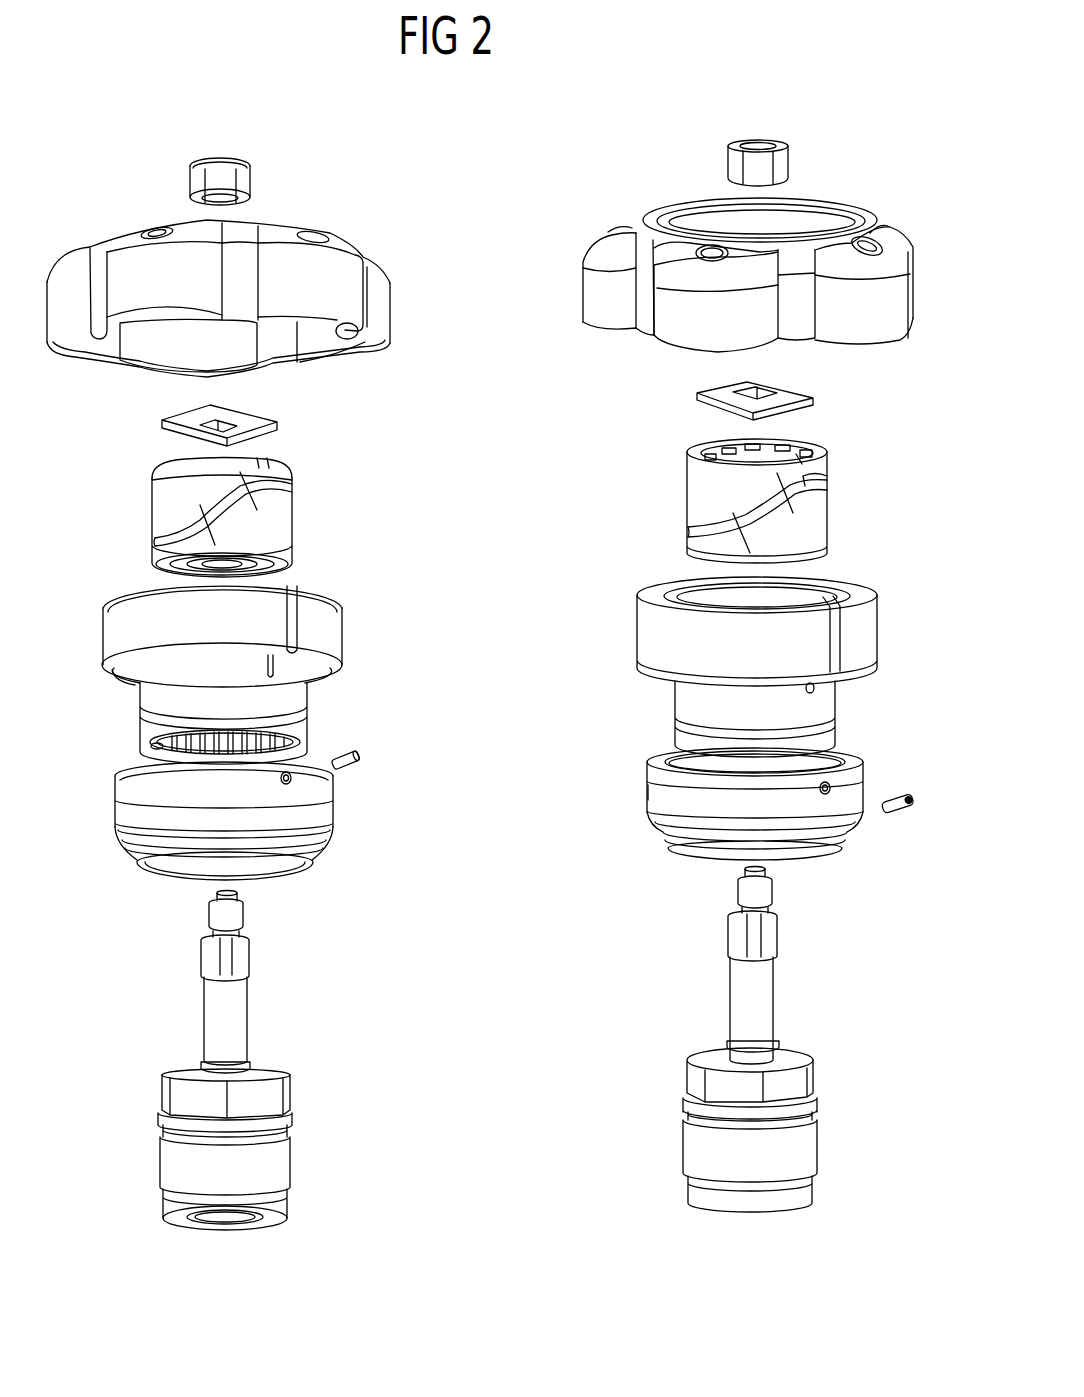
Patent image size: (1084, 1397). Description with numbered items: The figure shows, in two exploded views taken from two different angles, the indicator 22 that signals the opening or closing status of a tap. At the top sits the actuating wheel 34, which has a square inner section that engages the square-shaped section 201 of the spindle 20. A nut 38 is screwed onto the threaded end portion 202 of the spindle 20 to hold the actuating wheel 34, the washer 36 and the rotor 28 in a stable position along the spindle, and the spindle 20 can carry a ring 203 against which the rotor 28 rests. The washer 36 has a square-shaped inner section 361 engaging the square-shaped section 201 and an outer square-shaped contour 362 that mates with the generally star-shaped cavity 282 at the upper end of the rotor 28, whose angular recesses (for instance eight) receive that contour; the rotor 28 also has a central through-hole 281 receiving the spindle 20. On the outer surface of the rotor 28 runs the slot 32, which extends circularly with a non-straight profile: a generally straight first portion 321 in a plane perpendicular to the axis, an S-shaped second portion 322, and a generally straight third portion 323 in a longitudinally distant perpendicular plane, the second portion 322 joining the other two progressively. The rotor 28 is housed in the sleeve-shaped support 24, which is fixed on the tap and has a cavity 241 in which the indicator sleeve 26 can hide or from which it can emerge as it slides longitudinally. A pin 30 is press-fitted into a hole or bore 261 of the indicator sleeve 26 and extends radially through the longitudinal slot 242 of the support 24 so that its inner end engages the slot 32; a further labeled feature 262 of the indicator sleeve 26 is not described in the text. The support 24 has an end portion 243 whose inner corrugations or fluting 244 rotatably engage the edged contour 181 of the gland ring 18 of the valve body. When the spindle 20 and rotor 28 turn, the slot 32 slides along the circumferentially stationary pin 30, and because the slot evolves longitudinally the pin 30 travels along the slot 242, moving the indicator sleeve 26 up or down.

The nut 38 is at (555, 156).
The actuating wheel 34 is at (540, 275).
The washer 36 is at (528, 399).
The square-shaped inner section 361 is at (790, 376).
The outer square-shaped contour 362 is at (796, 392).
The rotor 28 is at (489, 488).
The central through-hole 281 is at (718, 432).
The cavity 282 is at (822, 431).
The slot 32 is at (489, 508).
The first portion 321 is at (568, 498).
The second portion 322 is at (544, 534).
The third portion 323 is at (386, 542).
The indicator 22 is at (504, 717).
The sleeve-shaped support 24 is at (504, 674).
The cavity 241 is at (95, 695).
The longitudinal slot 242 is at (625, 626).
The end portion 243 is at (172, 746).
The corrugations or fluting 244 is at (117, 768).
The indicator sleeve 26 is at (526, 814).
The hole or bore 261 is at (609, 794).
The outer surface of base ring 262 is at (618, 780).
The pin 30 is at (362, 758).
The spindle 20 is at (490, 963).
The square-shaped section 201 is at (489, 940).
The threaded end portion 202 is at (490, 895).
The ring 203 is at (490, 1041).
The gland ring 18 is at (444, 1135).
The edged contour 181 is at (442, 1079).